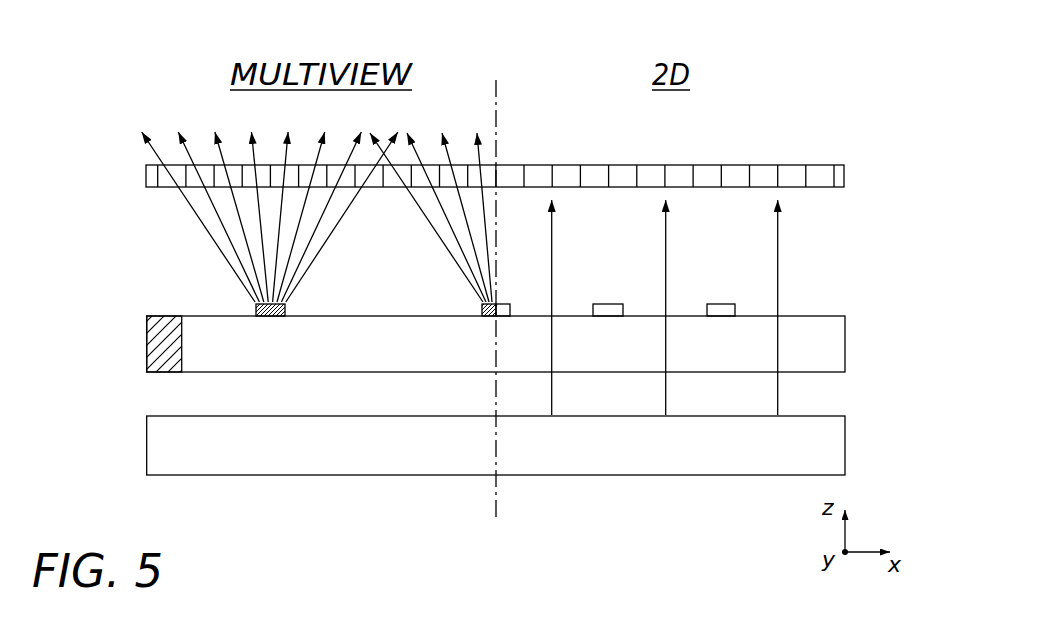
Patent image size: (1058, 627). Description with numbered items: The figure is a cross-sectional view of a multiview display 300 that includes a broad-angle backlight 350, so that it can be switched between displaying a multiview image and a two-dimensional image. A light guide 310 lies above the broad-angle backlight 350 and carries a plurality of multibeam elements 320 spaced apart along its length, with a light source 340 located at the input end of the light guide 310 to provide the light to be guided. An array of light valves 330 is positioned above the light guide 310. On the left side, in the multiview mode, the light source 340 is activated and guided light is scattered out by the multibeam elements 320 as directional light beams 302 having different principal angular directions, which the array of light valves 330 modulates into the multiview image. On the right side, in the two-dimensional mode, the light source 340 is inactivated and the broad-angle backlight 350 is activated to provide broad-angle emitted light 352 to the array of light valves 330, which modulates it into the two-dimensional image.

The multiview display 300 is at (803, 57).
The directional light beams 302 is at (198, 230).
The light guide 310 is at (840, 344).
The multibeam elements 320 is at (248, 298).
The array of light valves 330 is at (137, 170).
The light source 340 is at (148, 343).
The broad-angle backlight 350 is at (152, 445).
The broad-angle emitted light 352 is at (822, 215).